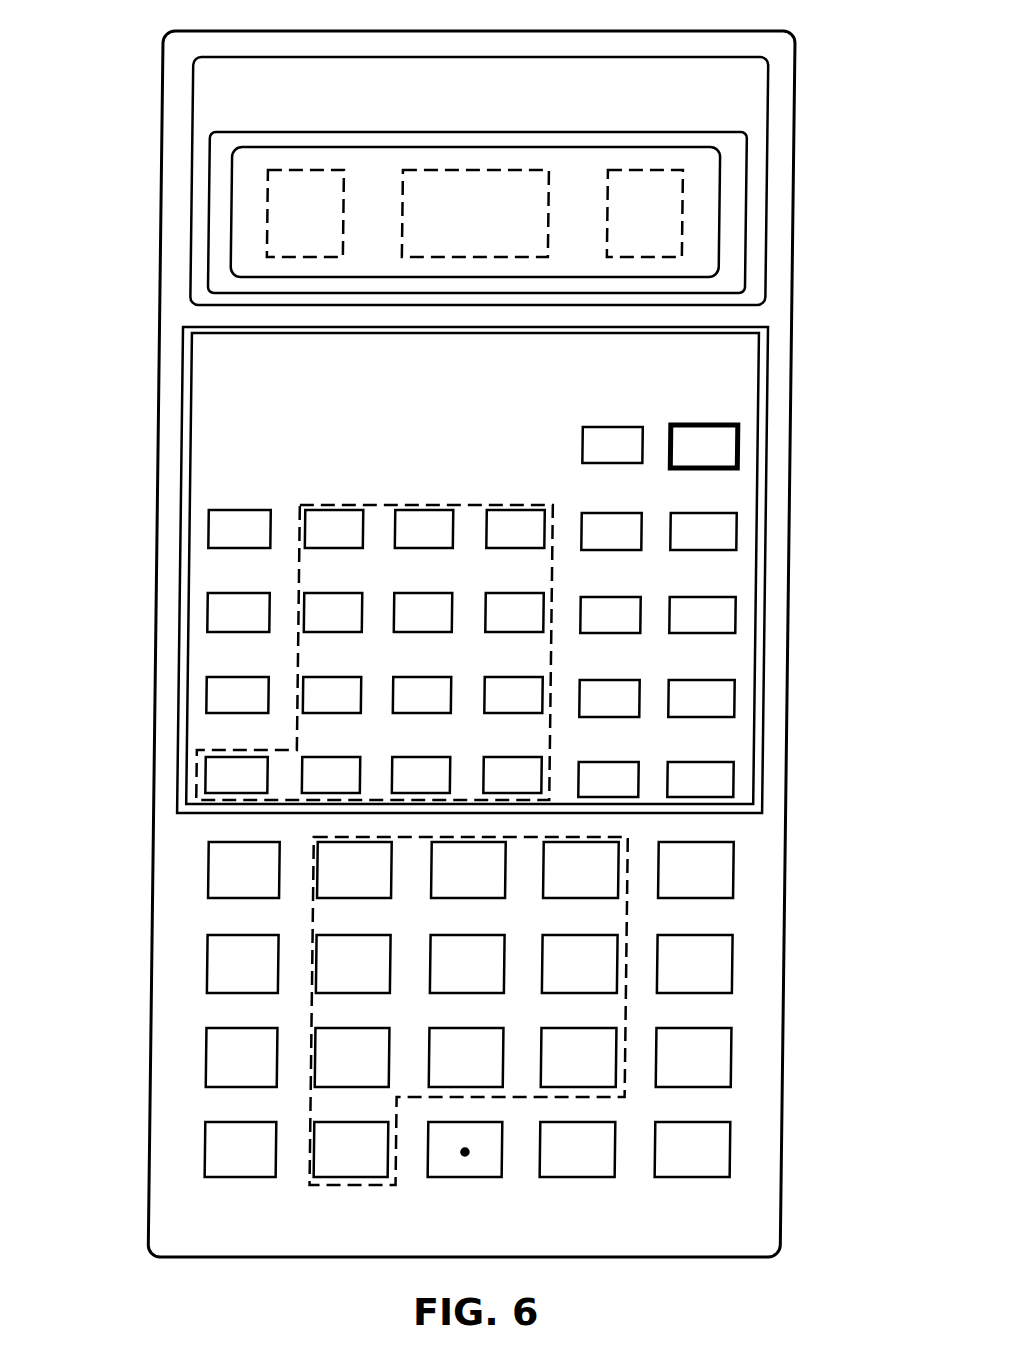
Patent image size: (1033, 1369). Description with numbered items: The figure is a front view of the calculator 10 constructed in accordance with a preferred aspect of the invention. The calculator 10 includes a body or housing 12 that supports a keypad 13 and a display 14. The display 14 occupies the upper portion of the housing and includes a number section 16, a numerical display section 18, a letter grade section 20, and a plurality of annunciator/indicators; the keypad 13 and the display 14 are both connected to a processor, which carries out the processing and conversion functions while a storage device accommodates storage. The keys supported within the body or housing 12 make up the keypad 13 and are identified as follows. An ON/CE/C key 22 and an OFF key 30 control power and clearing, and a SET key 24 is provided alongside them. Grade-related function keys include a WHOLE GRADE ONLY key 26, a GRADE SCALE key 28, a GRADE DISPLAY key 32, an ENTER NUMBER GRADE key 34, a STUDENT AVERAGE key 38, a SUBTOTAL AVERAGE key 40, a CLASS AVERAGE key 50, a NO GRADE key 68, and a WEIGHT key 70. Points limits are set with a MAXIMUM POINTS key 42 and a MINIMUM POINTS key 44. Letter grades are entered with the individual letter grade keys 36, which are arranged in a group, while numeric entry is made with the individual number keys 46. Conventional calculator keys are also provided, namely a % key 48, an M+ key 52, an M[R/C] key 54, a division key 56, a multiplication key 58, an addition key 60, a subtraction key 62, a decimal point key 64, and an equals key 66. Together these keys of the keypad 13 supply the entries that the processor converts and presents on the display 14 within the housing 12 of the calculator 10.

The calculator 10 is at (822, 222).
The body or housing 12 is at (797, 282).
The keypad 13 is at (97, 362).
The display 14 is at (723, 192).
The number section 16 is at (329, 180).
The numerical display section 18 is at (485, 187).
The letter grade section 20 is at (649, 183).
The ON/CE/C key 22 is at (733, 457).
The SET key 24 is at (641, 525).
The WHOLE GRADE ONLY key 26 is at (730, 612).
The GRADE SCALE key 28 is at (634, 610).
The OFF key 30 is at (637, 435).
The GRADE DISPLAY key 32 is at (640, 693).
The ENTER NUMBER GRADE key 34 is at (634, 775).
The individual letter grade keys 36 is at (220, 776).
The STUDENT AVERAGE key 38 is at (726, 783).
The SUBTOTAL AVERAGE key 40 is at (731, 700).
The MAXIMUM POINTS key 42 is at (218, 523).
The MINIMUM POINTS key 44 is at (218, 610).
The individual number keys 46 is at (368, 1165).
The % key 48 is at (226, 963).
The CLASS AVERAGE key 50 is at (734, 537).
The M+ key 52 is at (226, 1150).
The M[R/C] key 54 is at (226, 1053).
The division key 56 is at (734, 888).
The multiplication key 58 is at (735, 970).
The addition key 60 is at (736, 1065).
The subtraction key 62 is at (734, 1160).
The decimal point key 64 is at (477, 1178).
The equals key 66 is at (557, 1170).
The NO GRADE key 68 is at (220, 693).
The WEIGHT key 70 is at (226, 872).